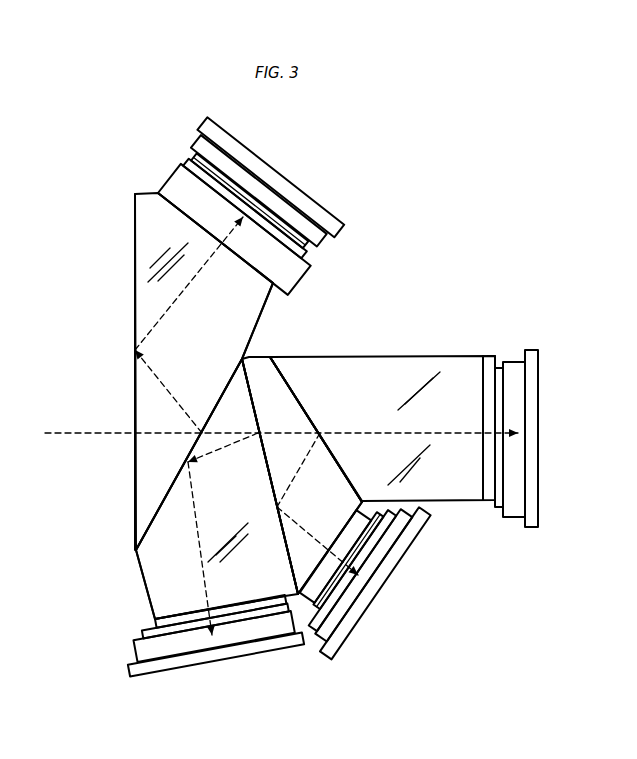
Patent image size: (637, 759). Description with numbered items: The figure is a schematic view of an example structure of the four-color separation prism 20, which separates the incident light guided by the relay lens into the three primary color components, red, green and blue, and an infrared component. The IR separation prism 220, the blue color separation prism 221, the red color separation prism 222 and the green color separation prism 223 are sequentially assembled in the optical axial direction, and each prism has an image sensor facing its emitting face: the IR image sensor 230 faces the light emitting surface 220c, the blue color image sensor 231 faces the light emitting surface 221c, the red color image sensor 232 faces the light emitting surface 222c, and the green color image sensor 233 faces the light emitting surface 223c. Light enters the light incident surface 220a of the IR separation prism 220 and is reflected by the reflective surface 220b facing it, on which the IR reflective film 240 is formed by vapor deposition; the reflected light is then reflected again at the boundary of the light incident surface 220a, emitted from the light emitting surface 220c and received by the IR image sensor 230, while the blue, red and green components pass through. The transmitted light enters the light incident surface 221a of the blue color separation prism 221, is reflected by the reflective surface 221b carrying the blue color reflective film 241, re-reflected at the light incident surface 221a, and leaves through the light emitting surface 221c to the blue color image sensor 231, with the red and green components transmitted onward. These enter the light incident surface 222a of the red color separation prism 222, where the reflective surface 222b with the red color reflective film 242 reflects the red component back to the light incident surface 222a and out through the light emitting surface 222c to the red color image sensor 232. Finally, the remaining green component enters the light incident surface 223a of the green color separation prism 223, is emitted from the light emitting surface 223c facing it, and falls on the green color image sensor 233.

The four-color separation prism 20 is at (508, 205).
The IR separation prism 220 is at (145, 303).
The light incident surface 220a is at (137, 387).
The reflective surface 220b is at (233, 373).
The light emitting surface 220c is at (235, 254).
The blue color separation prism 221 is at (163, 586).
The light incident surface 221a is at (160, 522).
The reflective surface 221b is at (268, 481).
The light emitting surface 221c is at (215, 607).
The red color separation prism 222 is at (257, 355).
The light incident surface 222a is at (250, 390).
The reflective surface 222b is at (337, 463).
The light emitting surface 222c is at (350, 533).
The green color separation prism 223 is at (411, 363).
The light incident surface 223a is at (300, 398).
The light emitting surface 223c is at (482, 446).
The IR image sensor 230 is at (300, 194).
The blue color image sensor 231 is at (178, 660).
The red color image sensor 232 is at (390, 568).
The green color image sensor 233 is at (525, 412).
The IR reflective film 240 is at (258, 331).
The blue color reflective film 241 is at (294, 600).
The red color reflective film 242 is at (346, 473).